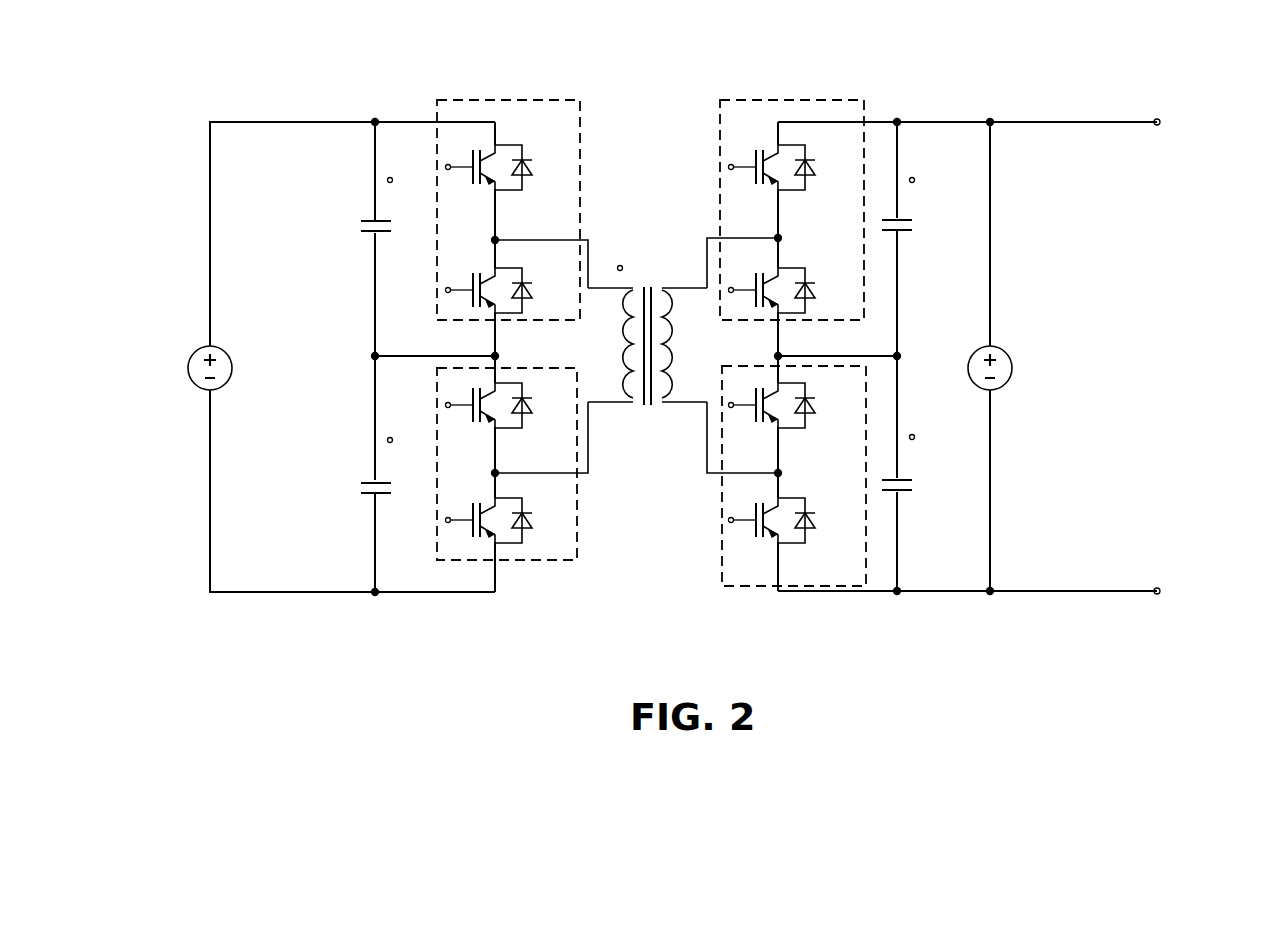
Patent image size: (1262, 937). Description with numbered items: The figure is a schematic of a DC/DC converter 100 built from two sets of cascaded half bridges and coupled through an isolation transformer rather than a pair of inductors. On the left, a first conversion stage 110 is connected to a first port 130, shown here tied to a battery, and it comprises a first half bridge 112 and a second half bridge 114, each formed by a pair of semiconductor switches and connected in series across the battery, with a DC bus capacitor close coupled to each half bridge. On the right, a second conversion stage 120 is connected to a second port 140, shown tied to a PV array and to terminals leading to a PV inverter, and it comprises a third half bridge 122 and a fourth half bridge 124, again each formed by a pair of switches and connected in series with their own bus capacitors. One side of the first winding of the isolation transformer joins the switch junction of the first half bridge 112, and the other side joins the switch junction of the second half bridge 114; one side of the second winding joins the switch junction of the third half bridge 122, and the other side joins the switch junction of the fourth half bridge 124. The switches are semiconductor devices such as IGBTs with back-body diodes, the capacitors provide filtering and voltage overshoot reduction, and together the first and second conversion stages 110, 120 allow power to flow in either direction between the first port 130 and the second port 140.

The DC/DC converter 100 is at (669, 335).
The first conversion stage 110 is at (477, 326).
The first half bridge 112 is at (436, 99).
The second half bridge 114 is at (510, 561).
The second conversion stage 120 is at (754, 335).
The third half bridge 122 is at (719, 99).
The fourth half bridge 124 is at (745, 588).
The first port 130 is at (192, 354).
The second port 140 is at (1094, 357).